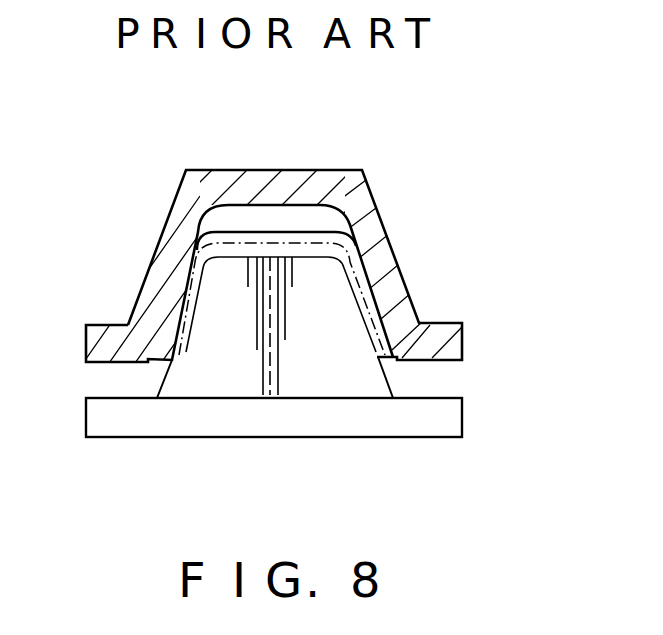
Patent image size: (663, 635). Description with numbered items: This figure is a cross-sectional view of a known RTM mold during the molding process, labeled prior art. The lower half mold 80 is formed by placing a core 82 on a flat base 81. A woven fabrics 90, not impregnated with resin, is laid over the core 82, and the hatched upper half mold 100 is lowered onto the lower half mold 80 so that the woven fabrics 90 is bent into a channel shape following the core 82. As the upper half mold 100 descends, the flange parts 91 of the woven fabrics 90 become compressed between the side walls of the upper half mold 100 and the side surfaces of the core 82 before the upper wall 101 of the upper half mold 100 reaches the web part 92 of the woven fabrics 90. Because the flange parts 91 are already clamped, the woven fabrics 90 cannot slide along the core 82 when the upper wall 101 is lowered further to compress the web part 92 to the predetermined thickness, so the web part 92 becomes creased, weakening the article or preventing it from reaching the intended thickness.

The lower half mold 80 is at (145, 441).
The base 81 is at (247, 418).
The core 82 is at (333, 370).
The woven fabrics 90 is at (228, 229).
The flange parts 91 is at (168, 319).
The web part 92 is at (293, 232).
The upper half mold 100 is at (186, 195).
The upper wall 101 is at (258, 210).